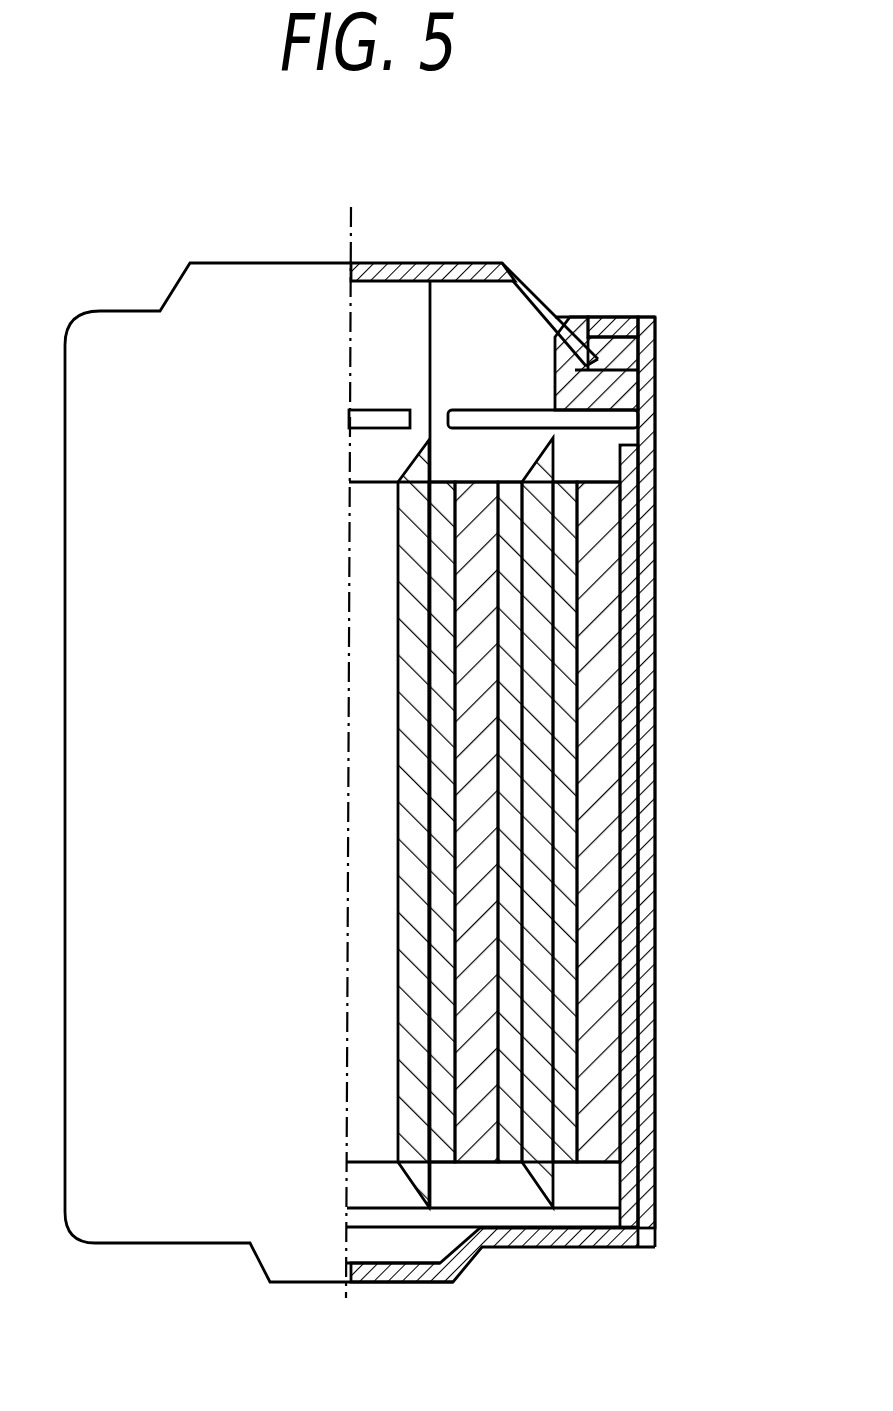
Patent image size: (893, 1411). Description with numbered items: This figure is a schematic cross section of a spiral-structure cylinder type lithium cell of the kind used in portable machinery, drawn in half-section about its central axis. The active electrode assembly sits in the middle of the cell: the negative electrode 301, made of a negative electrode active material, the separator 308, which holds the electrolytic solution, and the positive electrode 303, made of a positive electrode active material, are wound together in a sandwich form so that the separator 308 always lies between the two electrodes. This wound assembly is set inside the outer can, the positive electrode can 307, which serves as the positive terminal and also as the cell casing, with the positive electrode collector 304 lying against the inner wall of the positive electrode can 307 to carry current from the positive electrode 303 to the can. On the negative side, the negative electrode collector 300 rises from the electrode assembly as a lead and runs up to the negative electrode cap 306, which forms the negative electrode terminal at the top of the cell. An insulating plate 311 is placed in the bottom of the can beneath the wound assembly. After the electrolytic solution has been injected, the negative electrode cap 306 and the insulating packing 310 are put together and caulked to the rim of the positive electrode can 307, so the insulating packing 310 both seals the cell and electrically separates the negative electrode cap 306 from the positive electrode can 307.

The negative electrode collector 300 is at (433, 325).
The negative electrode 301 is at (541, 688).
The positive electrode 303 is at (603, 870).
The positive electrode collector 304 is at (628, 940).
The negative electrode terminal (negative electrode cap) 306 is at (463, 261).
The outer can (positive electrode can) 307 is at (522, 1240).
The separator 308 is at (565, 795).
The insulating packing 310 is at (650, 352).
The insulating plate 311 is at (593, 1220).